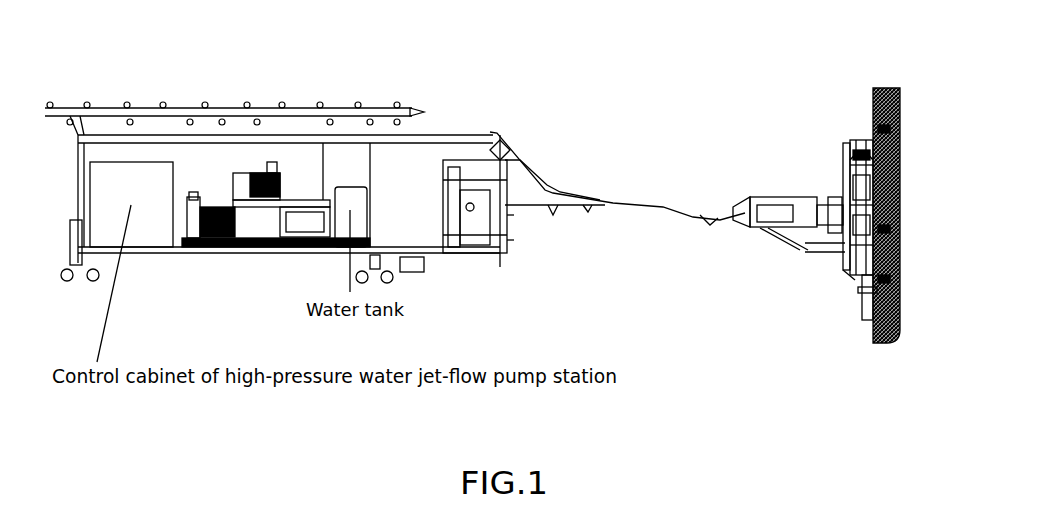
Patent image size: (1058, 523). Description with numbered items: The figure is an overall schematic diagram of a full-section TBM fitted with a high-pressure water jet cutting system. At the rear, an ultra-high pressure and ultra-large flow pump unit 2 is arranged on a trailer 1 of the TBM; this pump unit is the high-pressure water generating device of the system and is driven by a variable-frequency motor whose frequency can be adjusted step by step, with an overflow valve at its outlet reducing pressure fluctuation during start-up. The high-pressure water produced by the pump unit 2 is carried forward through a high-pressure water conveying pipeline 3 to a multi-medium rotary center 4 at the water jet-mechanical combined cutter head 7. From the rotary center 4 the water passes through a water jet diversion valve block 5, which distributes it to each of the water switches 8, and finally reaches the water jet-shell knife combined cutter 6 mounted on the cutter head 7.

The trailer 1 is at (268, 108).
The ultra-high pressure and ultra-large flow pump unit 2 is at (268, 235).
The high-pressure water conveying pipeline 3 is at (510, 143).
The multi-medium rotary center 4 is at (765, 200).
The water jet diversion valve block 5 is at (843, 147).
The water jet-shell knife combined cutter 6 is at (900, 152).
The water jet-mechanical combined cutter head 7 is at (870, 305).
The water switch 8 is at (868, 140).